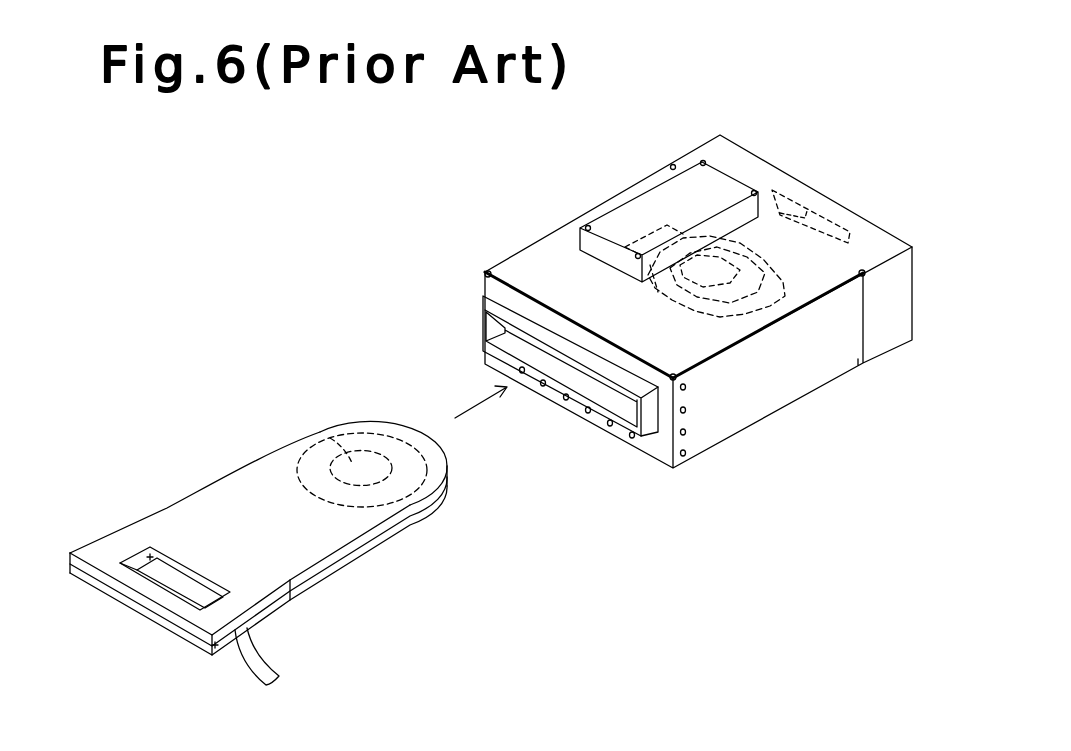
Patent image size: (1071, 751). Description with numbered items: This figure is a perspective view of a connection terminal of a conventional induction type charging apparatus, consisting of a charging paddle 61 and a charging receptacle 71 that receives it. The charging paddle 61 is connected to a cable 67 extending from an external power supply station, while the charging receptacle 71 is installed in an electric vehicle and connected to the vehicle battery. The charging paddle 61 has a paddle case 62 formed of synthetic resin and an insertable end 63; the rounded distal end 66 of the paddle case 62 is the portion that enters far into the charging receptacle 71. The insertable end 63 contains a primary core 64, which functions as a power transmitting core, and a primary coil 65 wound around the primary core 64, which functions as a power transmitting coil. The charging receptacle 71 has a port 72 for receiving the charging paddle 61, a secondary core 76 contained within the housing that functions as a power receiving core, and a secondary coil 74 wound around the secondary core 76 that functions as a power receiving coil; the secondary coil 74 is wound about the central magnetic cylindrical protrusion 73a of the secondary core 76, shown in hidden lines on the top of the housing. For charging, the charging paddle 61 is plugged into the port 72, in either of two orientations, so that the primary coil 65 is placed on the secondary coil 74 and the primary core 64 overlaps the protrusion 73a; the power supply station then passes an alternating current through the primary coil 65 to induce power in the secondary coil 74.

The charging paddle 61 is at (129, 490).
The paddle case 62 is at (232, 478).
The insertable end 63 is at (400, 508).
The primary core 64 is at (318, 438).
The primary coil 65 is at (449, 466).
The distal end 66 is at (377, 423).
The cable 67 is at (268, 662).
The charging receptacle 71 is at (480, 225).
The port 72 is at (603, 402).
The central magnetic cylindrical protrusion 73a is at (658, 292).
The secondary coil 74 is at (783, 262).
The secondary core 76 is at (720, 317).